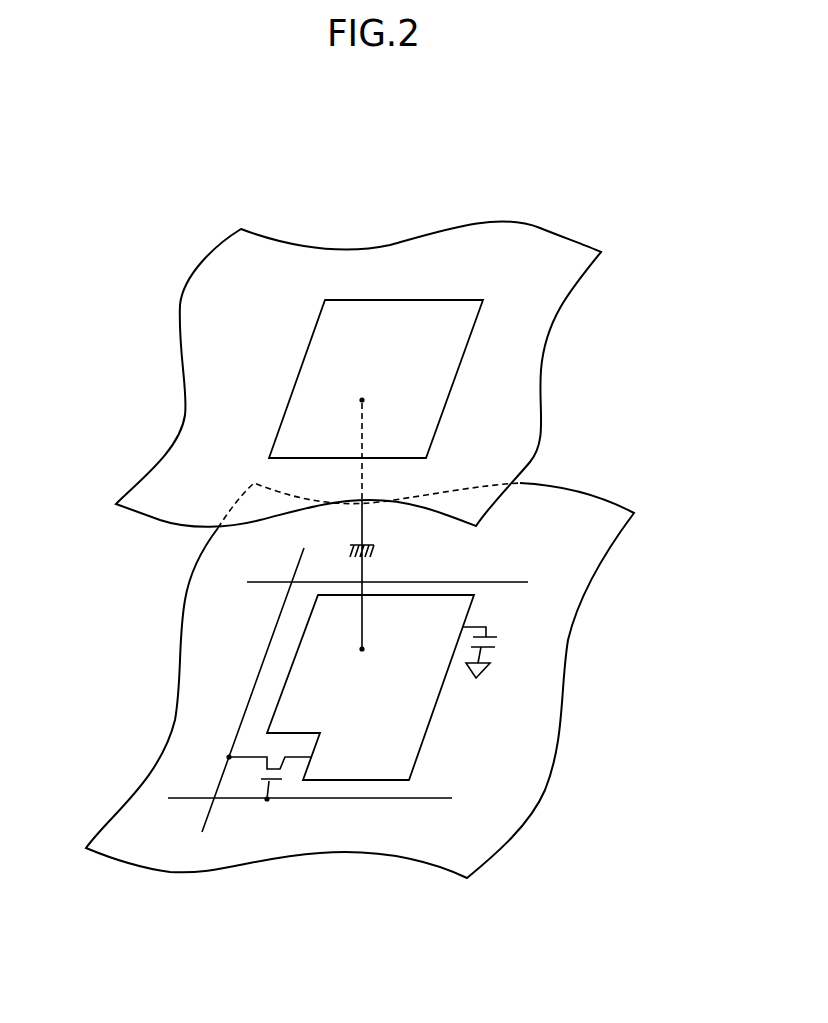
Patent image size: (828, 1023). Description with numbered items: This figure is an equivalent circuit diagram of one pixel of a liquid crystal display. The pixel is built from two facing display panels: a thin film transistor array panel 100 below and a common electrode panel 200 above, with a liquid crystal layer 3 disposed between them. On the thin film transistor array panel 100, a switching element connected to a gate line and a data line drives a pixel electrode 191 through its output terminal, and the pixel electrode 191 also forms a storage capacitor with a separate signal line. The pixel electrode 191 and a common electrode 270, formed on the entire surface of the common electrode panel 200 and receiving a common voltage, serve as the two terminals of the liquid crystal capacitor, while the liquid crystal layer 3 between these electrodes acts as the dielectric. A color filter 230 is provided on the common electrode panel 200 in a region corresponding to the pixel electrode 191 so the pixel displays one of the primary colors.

The liquid crystal layer 3 is at (132, 615).
The thin film transistor array panel 100 is at (578, 661).
The pixel electrode 191 is at (420, 745).
The common electrode panel 200 is at (369, 373).
The color filter 230 is at (445, 417).
The common electrode 270 is at (546, 322).